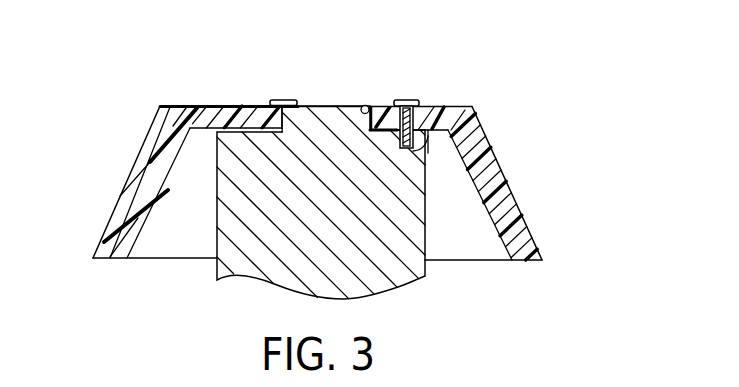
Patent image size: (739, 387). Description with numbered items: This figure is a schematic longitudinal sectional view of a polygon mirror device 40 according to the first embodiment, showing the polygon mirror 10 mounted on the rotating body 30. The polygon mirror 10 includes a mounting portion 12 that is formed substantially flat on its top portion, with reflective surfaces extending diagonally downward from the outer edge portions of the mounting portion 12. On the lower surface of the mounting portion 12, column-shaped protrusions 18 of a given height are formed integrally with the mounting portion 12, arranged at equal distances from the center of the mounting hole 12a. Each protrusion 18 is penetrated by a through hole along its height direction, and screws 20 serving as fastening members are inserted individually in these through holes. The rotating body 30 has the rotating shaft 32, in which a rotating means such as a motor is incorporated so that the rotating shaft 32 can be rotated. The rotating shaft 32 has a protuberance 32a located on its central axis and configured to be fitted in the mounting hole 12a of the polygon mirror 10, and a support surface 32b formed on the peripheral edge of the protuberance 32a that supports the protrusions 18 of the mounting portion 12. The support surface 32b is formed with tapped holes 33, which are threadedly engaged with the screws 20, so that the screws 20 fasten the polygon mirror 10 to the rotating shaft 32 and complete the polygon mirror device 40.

The polygon mirror 10 is at (161, 90).
The mounting portion 12 is at (213, 110).
The mounting hole 12a is at (367, 105).
The protrusions 18 is at (180, 138).
The screws 20 is at (283, 100).
The rotating body 30 is at (434, 249).
The rotating shaft 32 is at (428, 219).
The protuberance 32a is at (340, 106).
The support surface 32b is at (240, 130).
The tapped holes 33 is at (427, 158).
The polygon mirror device 40 is at (447, 81).